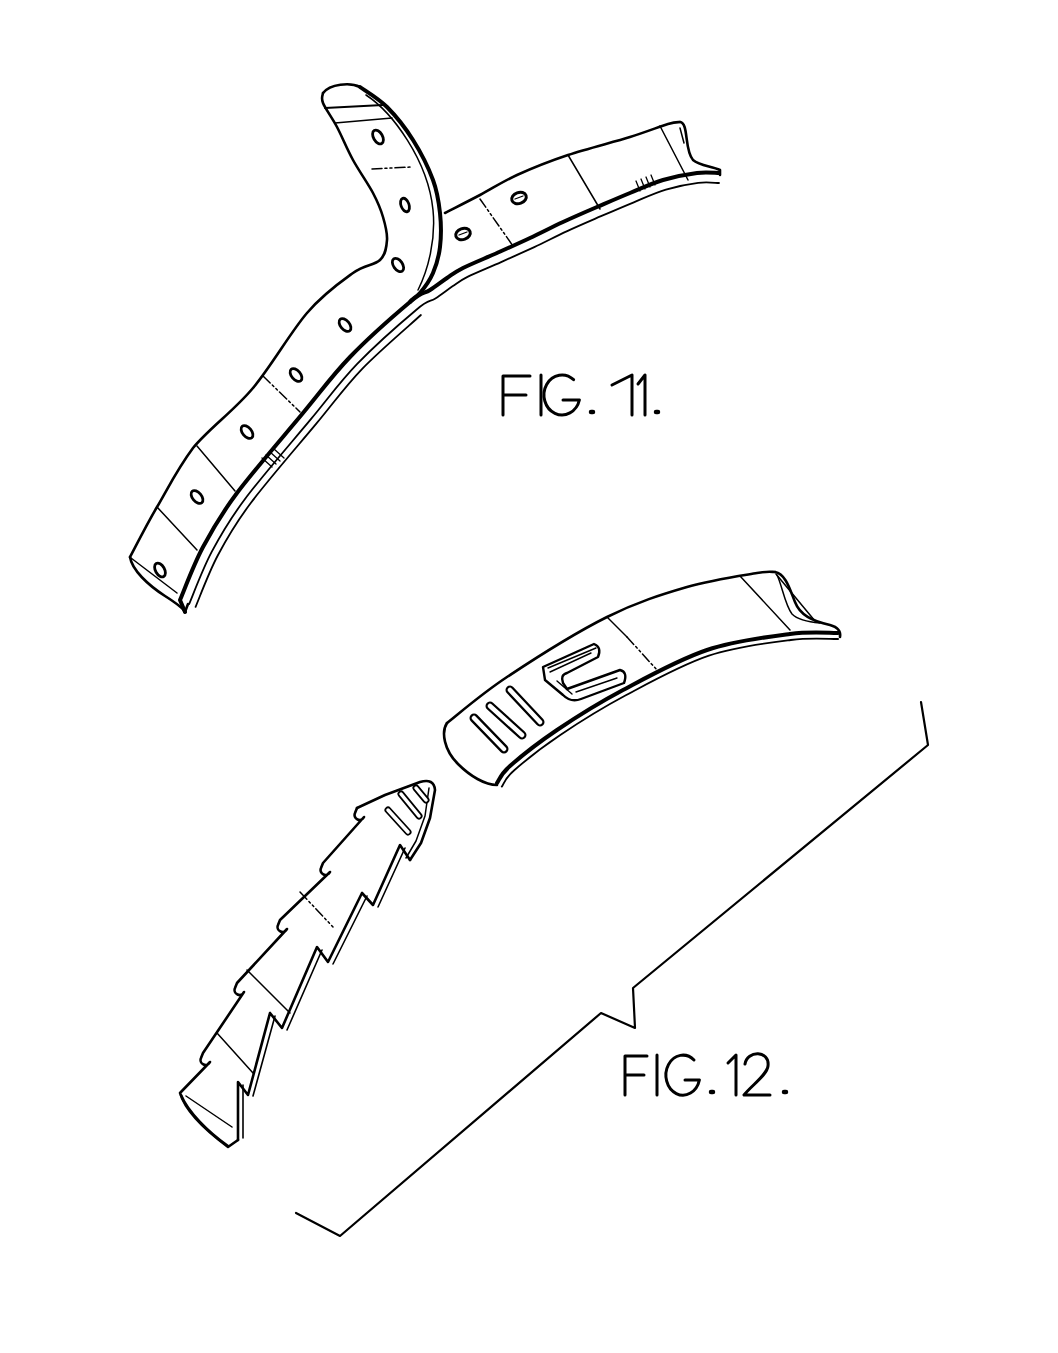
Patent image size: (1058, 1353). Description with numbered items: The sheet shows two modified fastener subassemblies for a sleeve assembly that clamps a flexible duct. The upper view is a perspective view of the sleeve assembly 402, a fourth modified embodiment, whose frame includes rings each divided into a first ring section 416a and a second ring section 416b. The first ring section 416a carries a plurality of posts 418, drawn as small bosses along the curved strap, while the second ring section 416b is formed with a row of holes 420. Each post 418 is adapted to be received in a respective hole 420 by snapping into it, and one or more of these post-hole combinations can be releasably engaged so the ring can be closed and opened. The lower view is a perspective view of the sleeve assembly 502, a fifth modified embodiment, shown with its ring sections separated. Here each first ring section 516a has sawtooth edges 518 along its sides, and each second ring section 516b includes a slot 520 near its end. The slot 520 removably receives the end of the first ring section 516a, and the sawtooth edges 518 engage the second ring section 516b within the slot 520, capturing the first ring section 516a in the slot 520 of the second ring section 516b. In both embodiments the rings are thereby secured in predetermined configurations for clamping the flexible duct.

In FIG. 11, the sleeve assembly 402 is at (414, 332).
In FIG. 11, the posts 418 is at (518, 192).
In FIG. 11, the holes 420 is at (246, 426).
In FIG. 11, the first ring section 416a is at (717, 180).
In FIG. 11, the second ring section 416b is at (127, 560).
In FIG. 12, the sleeve assembly 502 is at (682, 662).
In FIG. 12, the first ring section 516a is at (181, 1094).
In FIG. 12, the second ring section 516b is at (777, 572).
In FIG. 12, the sawtooth edges 518 is at (286, 964).
In FIG. 12, the slot 520 is at (553, 690).